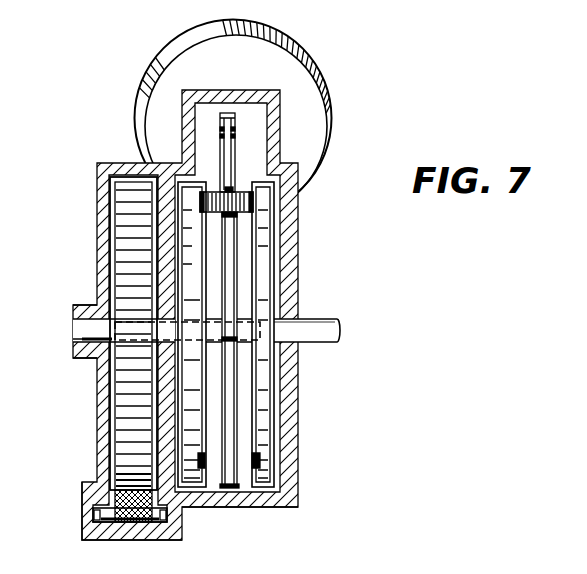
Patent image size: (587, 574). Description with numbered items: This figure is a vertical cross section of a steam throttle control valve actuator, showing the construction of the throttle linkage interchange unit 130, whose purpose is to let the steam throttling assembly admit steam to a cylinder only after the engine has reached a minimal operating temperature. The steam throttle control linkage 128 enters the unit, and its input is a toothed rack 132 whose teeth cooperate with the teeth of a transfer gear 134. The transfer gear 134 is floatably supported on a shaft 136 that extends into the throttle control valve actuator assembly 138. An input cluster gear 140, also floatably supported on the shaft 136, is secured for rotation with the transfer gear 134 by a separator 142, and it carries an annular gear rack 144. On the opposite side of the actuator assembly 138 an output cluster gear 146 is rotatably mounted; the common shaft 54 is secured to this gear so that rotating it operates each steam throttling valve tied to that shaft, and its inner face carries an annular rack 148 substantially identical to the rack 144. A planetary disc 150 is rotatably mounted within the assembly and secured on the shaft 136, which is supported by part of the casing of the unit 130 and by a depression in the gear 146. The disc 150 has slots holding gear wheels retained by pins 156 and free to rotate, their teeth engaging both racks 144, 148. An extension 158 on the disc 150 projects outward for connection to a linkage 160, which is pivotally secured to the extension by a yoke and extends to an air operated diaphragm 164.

The common shaft 54 is at (342, 330).
The steam throttle control linkage 128 is at (74, 505).
The throttle linkage interchange unit 130 is at (311, 222).
The toothed rack 132 is at (137, 522).
The transfer gear 134 is at (123, 250).
The shaft 136 is at (85, 332).
The throttle control valve actuator assembly 138 is at (309, 499).
The input cluster gear 140 is at (200, 408).
The separator 142 is at (163, 327).
The annular gear rack 144 is at (212, 468).
The output cluster gear 146 is at (283, 379).
The annular rack 148 is at (250, 468).
The planetary disc 150 is at (230, 260).
The pins 156 is at (222, 190).
The extension 158 is at (233, 142).
The linkage 160 is at (220, 128).
The air operated diaphragm 164 is at (339, 95).